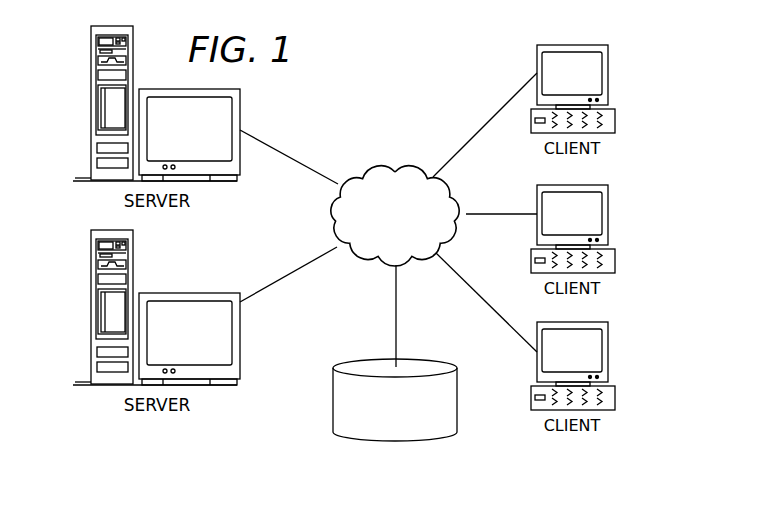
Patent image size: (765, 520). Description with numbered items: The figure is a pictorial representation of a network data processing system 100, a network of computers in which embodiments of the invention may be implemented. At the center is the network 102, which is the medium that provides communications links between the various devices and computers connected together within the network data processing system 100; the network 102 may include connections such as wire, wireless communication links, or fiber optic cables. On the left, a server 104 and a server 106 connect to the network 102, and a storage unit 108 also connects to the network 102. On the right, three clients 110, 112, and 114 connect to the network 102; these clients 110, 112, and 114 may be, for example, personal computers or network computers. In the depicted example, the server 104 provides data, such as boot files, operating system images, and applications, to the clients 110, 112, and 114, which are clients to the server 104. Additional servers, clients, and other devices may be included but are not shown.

The network data processing system 100 is at (444, 60).
The network 102 is at (368, 163).
The server 104 is at (92, 105).
The server 106 is at (92, 308).
The storage unit 108 is at (378, 441).
The client 110 is at (608, 75).
The client 112 is at (608, 215).
The client 114 is at (608, 350).